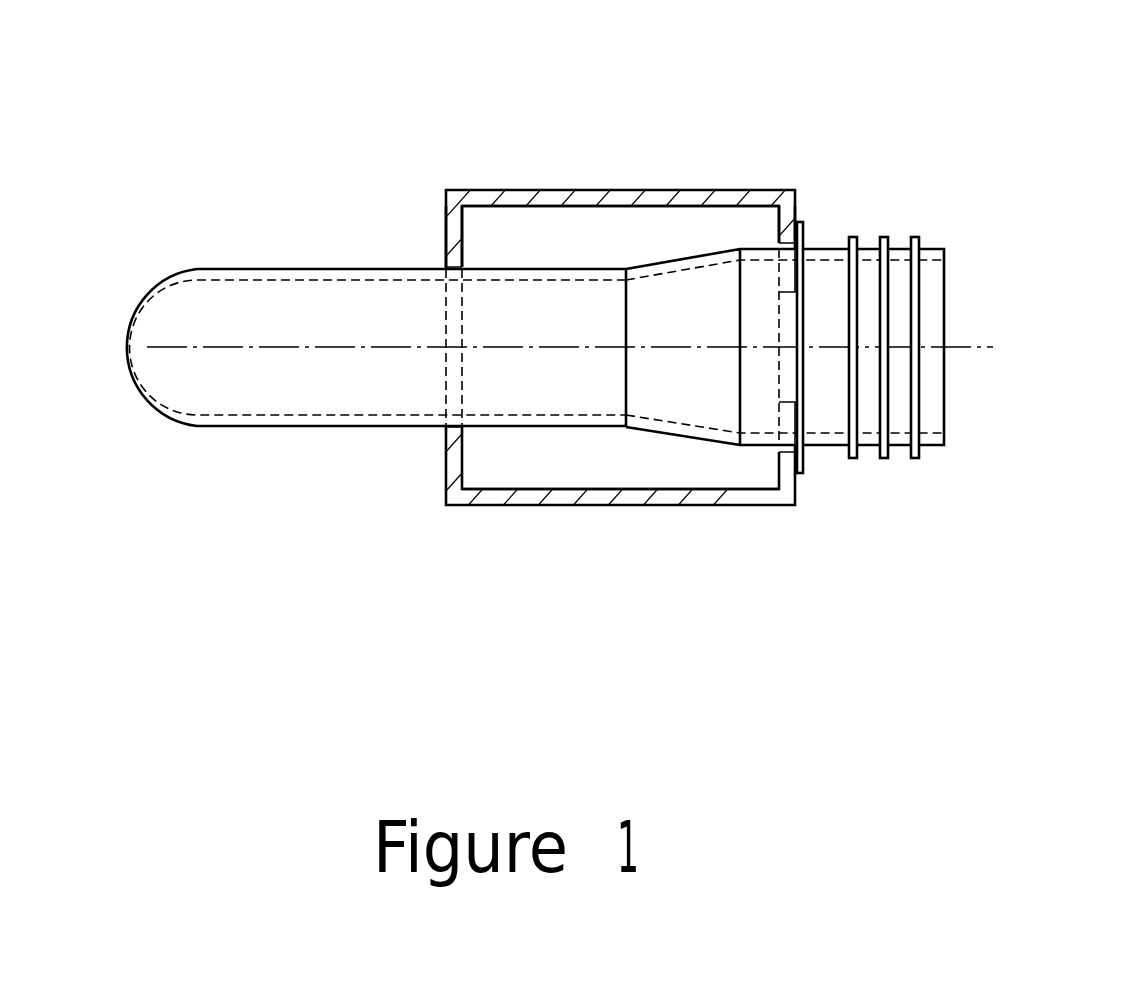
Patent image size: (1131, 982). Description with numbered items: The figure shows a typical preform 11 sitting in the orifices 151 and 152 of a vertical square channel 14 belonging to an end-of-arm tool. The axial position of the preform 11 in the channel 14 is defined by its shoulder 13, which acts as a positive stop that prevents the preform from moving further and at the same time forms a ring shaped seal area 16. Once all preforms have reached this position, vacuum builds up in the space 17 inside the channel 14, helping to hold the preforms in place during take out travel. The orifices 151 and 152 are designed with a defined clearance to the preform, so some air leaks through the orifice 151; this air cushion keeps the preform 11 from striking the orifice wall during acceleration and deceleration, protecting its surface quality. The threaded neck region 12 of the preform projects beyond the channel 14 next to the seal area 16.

The preform 11 is at (243, 308).
The thread rings 12 is at (915, 285).
The shoulder 13 is at (802, 272).
The vertical square channel 14 is at (720, 202).
The orifice 151 is at (464, 242).
The orifice 152 is at (802, 222).
The ring shaped seal area 16 is at (800, 468).
The space 17 is at (577, 237).